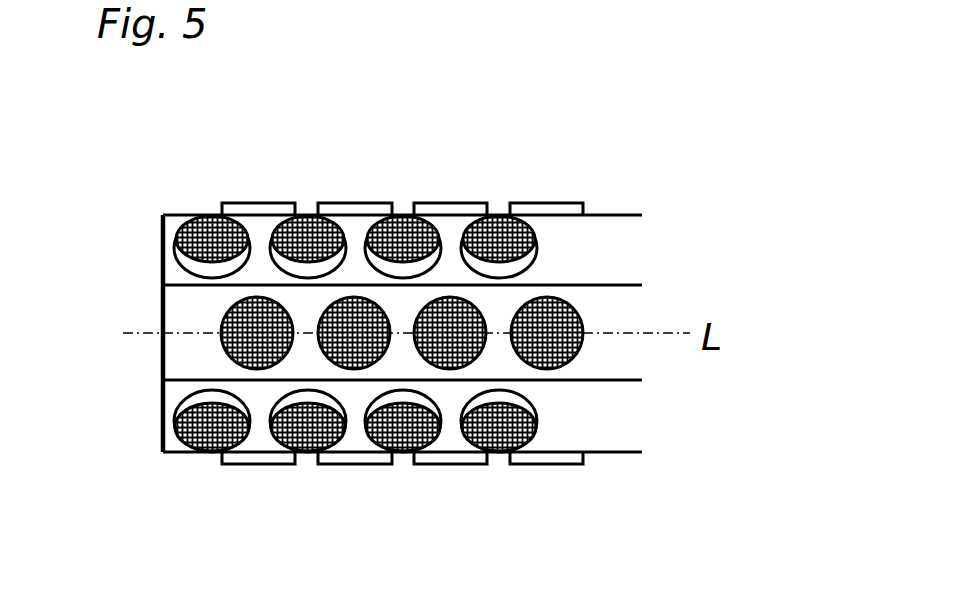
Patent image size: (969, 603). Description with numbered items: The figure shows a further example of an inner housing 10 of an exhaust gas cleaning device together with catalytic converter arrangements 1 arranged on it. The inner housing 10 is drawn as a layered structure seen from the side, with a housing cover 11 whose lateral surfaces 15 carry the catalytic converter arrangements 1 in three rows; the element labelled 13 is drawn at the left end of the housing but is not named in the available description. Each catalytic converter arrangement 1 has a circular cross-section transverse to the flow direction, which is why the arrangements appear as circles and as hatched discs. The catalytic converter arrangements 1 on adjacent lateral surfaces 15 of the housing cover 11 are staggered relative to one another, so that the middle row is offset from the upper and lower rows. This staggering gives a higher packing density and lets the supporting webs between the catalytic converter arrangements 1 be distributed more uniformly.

The catalytic converter arrangement 1 is at (352, 182).
The inner housing 10 is at (154, 468).
The housing cover 11 is at (163, 263).
The housing 13 is at (140, 316).
The lateral surface 15 is at (173, 228).